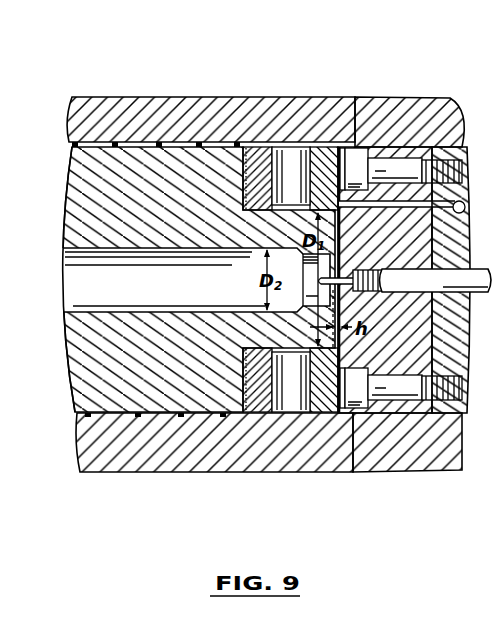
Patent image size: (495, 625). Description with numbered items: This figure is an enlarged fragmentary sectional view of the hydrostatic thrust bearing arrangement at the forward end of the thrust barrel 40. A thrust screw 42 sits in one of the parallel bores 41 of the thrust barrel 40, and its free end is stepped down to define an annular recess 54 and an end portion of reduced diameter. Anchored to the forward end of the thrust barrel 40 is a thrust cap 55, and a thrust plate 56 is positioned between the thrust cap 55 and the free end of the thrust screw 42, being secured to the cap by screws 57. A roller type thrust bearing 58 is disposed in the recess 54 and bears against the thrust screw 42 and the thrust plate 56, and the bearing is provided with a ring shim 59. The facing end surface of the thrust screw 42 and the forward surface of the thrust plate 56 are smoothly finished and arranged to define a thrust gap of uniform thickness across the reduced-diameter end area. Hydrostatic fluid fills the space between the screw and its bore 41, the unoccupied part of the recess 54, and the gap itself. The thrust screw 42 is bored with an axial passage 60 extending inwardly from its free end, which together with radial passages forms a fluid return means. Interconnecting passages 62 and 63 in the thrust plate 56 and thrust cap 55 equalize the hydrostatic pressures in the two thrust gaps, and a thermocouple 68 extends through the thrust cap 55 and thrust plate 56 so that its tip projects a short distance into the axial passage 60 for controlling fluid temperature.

The thrust barrel 40 is at (138, 118).
The bore 41 is at (142, 413).
The thrust screw 42 is at (82, 178).
The annular recess 54 is at (298, 207).
The thrust cap 55 is at (363, 106).
The thrust plate 56 is at (392, 362).
The screw 57 is at (380, 168).
The roller type thrust bearing 58 is at (287, 405).
The ring shim 59 is at (242, 405).
The axial passage 60 is at (176, 279).
The interconnecting passage 62 is at (413, 212).
The interconnecting passage 63 is at (464, 205).
The thermocouple 68 is at (405, 280).